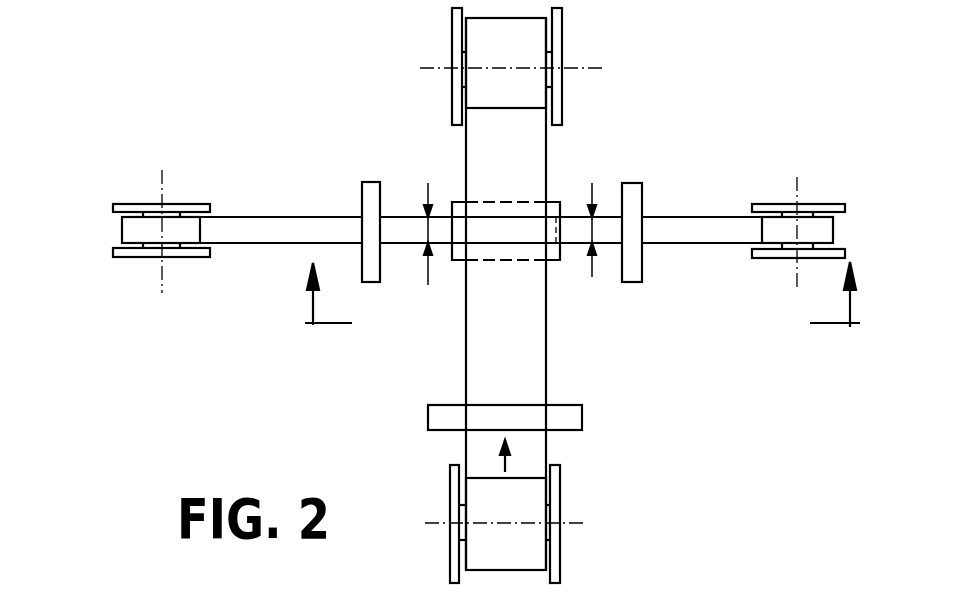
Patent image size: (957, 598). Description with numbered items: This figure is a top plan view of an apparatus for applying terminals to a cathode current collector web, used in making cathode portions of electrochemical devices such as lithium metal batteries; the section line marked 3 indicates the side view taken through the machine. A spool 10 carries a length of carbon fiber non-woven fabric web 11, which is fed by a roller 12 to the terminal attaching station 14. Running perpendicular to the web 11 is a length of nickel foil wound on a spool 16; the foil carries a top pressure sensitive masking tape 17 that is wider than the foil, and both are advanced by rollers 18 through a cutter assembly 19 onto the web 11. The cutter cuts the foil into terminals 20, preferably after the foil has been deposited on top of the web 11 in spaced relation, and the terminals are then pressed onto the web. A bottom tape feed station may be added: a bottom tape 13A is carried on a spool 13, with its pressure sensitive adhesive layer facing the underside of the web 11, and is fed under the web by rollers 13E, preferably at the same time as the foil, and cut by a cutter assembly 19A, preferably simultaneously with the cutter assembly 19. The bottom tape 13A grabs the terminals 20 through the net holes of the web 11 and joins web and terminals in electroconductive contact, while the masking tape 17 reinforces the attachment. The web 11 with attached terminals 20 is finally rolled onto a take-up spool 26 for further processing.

The spool 10 is at (553, 532).
The carbon fiber non-woven fabric web 11 is at (532, 443).
The roller 12 is at (572, 413).
The spool 13 is at (132, 208).
The bottom tape 13A is at (250, 233).
The rollers 13E is at (370, 200).
The terminal attaching station 14 is at (413, 185).
The spool 16 is at (813, 205).
The top pressure sensitive masking tape 17 is at (700, 238).
The rollers 18 is at (633, 197).
The cutter assembly 19 is at (616, 185).
The cutter assembly 19A is at (427, 270).
The terminals 20 is at (517, 232).
The spool 26 is at (558, 40).
The section line 3- 3 is at (582, 294).